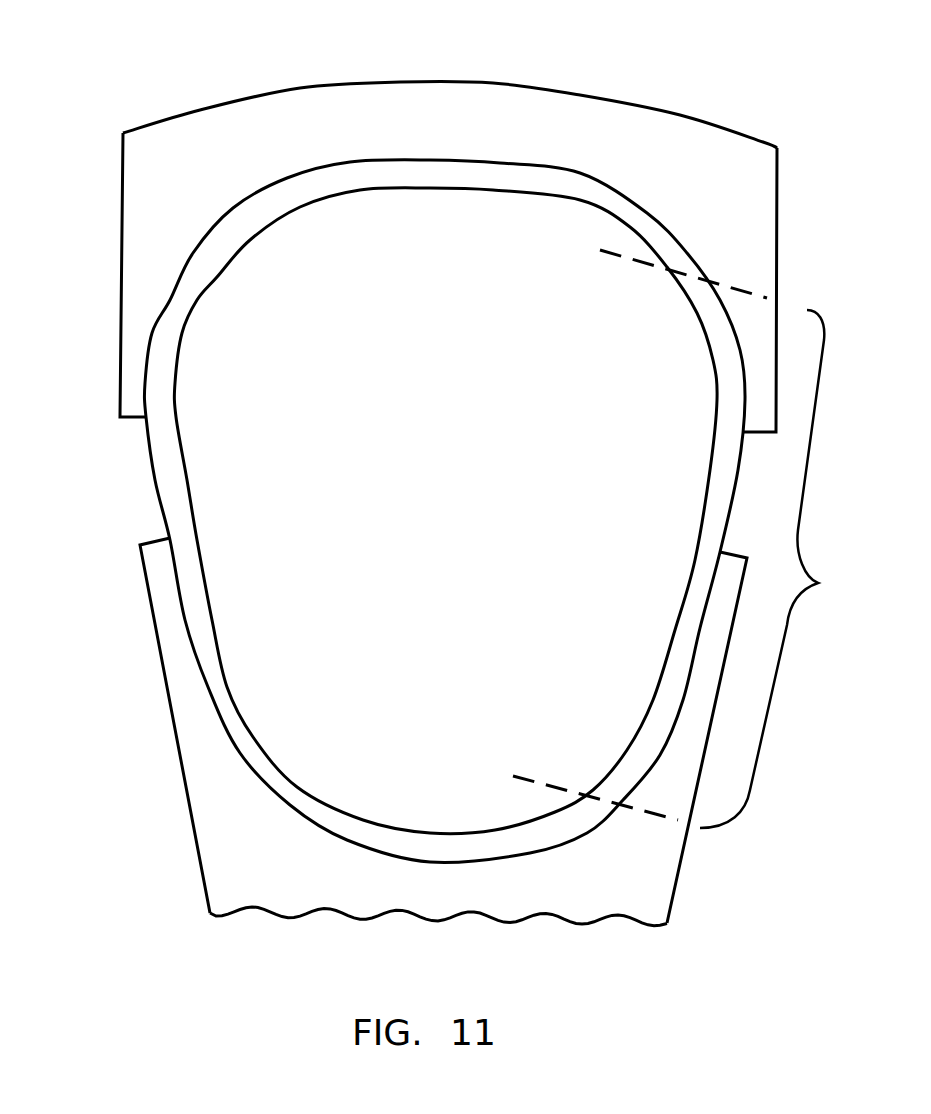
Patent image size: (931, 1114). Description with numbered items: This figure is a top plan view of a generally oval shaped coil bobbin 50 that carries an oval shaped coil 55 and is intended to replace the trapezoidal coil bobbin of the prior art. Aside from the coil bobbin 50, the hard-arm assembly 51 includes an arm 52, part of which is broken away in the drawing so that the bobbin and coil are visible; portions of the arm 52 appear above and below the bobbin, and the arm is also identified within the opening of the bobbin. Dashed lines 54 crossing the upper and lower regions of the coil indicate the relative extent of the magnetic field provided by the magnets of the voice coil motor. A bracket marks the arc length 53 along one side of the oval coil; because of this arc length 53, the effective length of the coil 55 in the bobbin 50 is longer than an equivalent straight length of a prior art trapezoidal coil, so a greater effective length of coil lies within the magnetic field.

The coil bobbin 50 is at (133, 479).
The hard-arm assembly 51 is at (294, 72).
The arm 52 is at (150, 198).
The arc length 53 is at (778, 569).
The dashed lines 54 is at (602, 270).
The oval shaped coil 55 is at (710, 515).